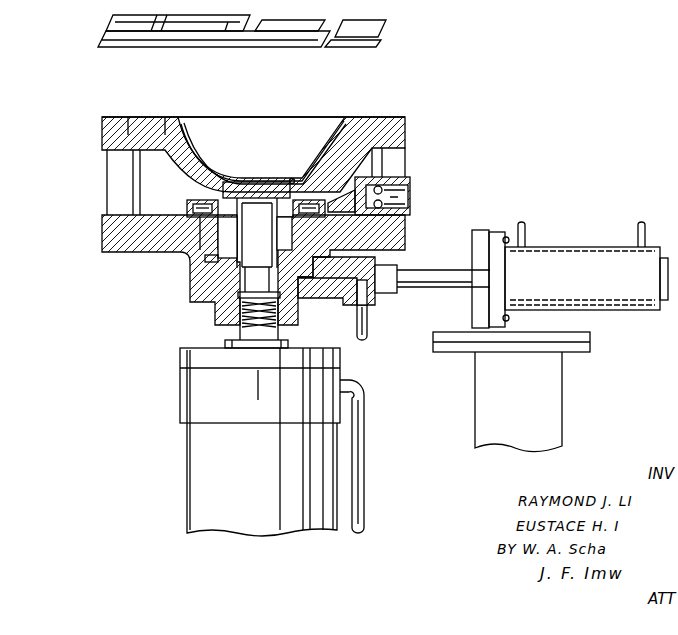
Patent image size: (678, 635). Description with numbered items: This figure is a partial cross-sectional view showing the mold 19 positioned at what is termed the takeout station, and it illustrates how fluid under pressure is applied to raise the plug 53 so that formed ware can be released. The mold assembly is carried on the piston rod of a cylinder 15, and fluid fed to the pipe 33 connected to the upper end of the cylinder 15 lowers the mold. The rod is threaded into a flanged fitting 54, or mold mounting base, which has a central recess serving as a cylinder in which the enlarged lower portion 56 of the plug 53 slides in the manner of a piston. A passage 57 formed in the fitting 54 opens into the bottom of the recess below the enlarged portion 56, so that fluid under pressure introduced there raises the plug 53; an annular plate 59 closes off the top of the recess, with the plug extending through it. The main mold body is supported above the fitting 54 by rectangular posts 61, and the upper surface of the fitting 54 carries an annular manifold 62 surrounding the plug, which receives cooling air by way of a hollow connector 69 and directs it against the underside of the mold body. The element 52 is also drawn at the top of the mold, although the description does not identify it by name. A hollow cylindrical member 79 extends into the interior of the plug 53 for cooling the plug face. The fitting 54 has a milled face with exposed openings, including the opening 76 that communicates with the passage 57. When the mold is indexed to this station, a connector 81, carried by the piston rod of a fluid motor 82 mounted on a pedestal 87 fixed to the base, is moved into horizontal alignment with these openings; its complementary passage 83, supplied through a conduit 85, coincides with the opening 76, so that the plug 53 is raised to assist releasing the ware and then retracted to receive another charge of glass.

The cylinder 15 is at (200, 466).
The mold 19 is at (107, 133).
The pipe 33 is at (358, 453).
The cover sheet 52 is at (141, 127).
The plug 53 is at (265, 130).
The flanged fitting 54 is at (199, 289).
The enlarged lower portion of the plug 56 is at (213, 258).
The passage 57 is at (300, 272).
The annular plate 59 is at (197, 226).
The rectangular posts 61 is at (107, 171).
The annular manifold 62 is at (190, 206).
The hollow connector 69 is at (410, 186).
The opening 76 is at (314, 282).
The hollow cylindrical member 79 is at (262, 205).
The connector 81 is at (372, 276).
The fluid motor 82 is at (572, 255).
The passage 83 is at (366, 286).
The conduit 85 is at (366, 328).
The pedestal 87 is at (548, 405).